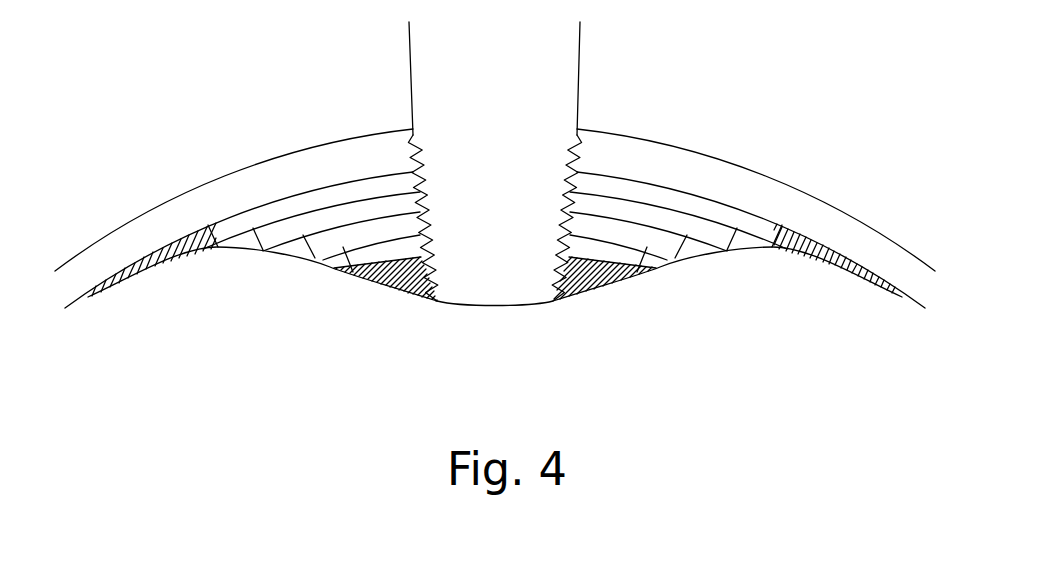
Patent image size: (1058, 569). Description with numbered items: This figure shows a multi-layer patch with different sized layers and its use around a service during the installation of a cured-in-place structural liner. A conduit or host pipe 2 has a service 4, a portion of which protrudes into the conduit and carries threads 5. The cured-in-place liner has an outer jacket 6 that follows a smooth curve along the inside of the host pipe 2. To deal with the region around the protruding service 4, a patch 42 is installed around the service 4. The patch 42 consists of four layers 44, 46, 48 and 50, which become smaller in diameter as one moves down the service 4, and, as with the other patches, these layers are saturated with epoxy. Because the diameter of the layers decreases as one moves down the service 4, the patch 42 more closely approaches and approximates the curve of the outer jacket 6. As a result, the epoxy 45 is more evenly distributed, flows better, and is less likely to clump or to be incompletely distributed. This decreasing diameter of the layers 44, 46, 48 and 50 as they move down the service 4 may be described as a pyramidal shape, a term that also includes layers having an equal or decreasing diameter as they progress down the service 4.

The host pipe 2 is at (812, 198).
The service 4 is at (547, 161).
The threads 5 is at (420, 170).
The outer jacket 6 is at (90, 297).
The patch 42 is at (512, 305).
The layer 44 is at (227, 230).
The epoxy 45 is at (411, 290).
The layer 46 is at (282, 232).
The layer 48 is at (342, 240).
The layer 50 is at (495, 304).